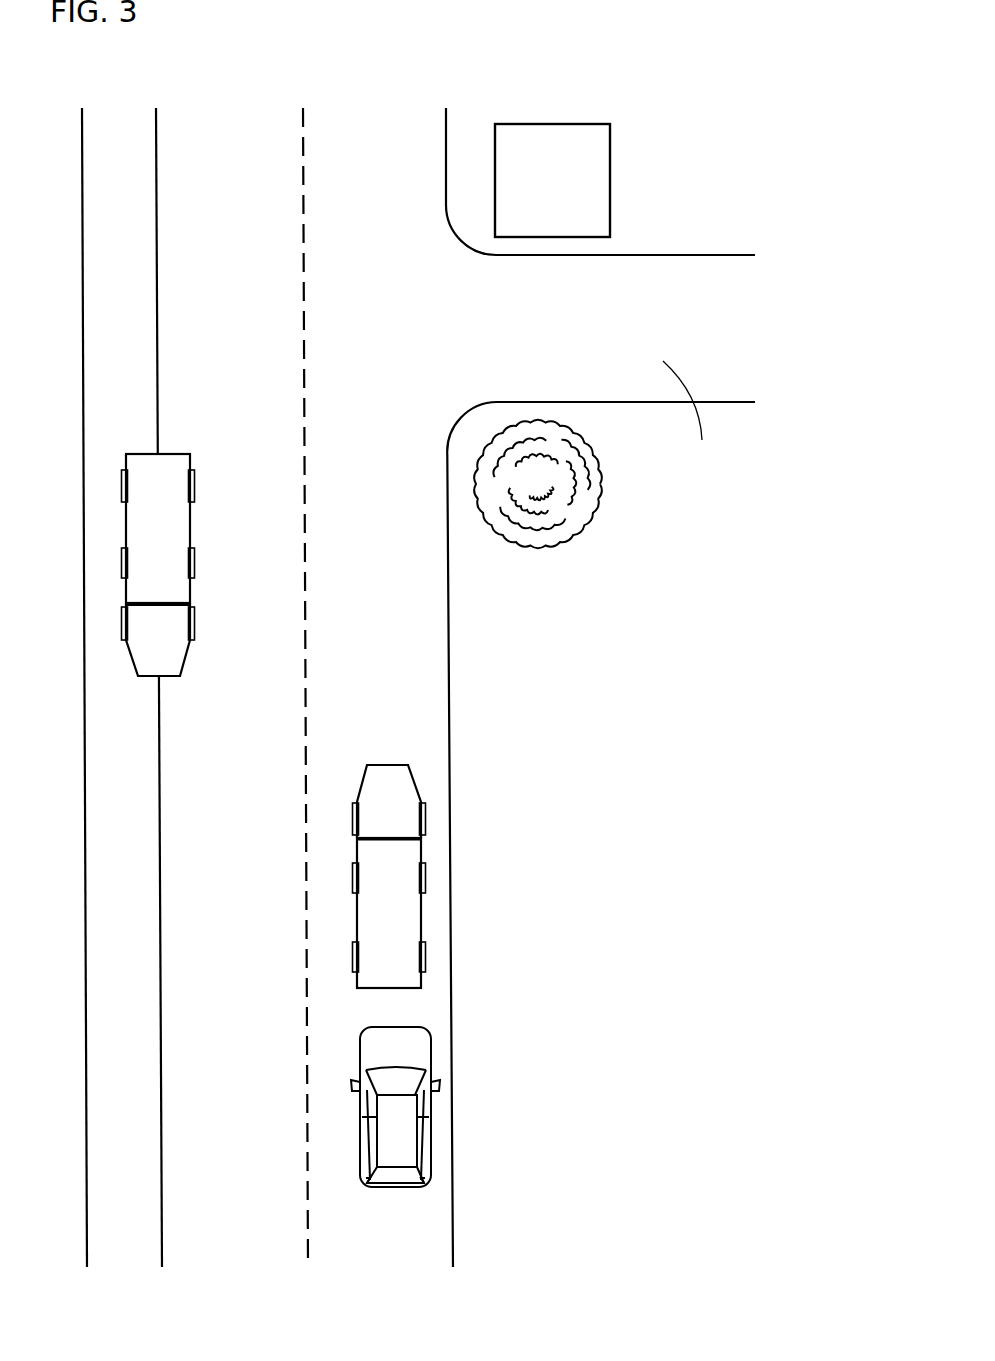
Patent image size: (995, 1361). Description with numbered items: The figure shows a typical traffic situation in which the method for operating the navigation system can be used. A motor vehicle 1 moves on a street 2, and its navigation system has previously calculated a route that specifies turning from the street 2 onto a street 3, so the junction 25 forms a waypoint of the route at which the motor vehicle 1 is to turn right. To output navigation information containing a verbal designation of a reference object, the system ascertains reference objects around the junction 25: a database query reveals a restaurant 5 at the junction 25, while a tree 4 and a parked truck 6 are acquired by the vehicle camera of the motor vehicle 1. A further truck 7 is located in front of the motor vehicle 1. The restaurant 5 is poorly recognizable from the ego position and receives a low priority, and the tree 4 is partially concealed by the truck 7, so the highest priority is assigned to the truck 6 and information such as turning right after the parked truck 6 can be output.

The motor vehicle 1 is at (431, 1108).
The street 2 is at (410, 598).
The street 3 is at (687, 414).
The tree 4 is at (595, 512).
The restaurant 5 is at (610, 172).
The parked truck 6 is at (126, 522).
The truck 7 is at (421, 834).
The junction 25 is at (439, 325).